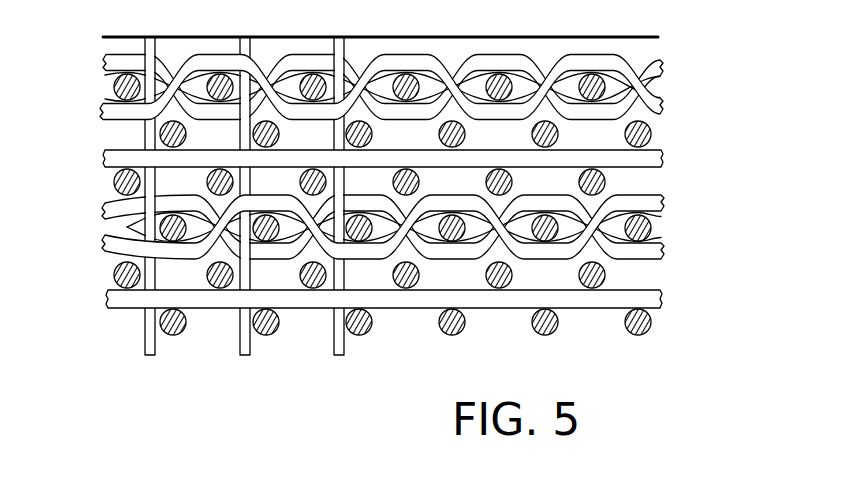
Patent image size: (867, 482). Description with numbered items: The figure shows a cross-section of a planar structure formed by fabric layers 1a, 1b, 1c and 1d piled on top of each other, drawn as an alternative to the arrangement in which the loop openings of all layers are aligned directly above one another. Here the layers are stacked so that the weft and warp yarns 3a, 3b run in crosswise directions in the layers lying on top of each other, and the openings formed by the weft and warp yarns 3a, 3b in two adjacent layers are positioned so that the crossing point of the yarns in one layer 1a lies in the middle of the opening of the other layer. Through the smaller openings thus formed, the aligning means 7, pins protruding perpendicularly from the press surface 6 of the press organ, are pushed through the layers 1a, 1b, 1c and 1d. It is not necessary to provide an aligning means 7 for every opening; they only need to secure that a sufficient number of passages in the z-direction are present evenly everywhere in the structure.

The fabric layer 1a is at (403, 140).
The fabric layer 1b is at (697, 162).
The fabric layer 1c is at (697, 232).
The fabric layer 1d is at (697, 302).
The weft yarn 3a is at (117, 90).
The warp yarn 3b is at (120, 118).
The press surface 6 is at (643, 38).
The aligning means 7 is at (339, 368).